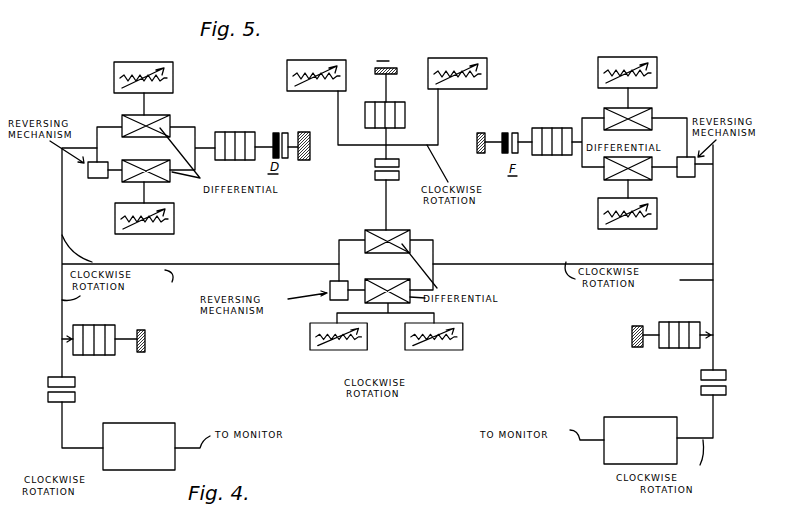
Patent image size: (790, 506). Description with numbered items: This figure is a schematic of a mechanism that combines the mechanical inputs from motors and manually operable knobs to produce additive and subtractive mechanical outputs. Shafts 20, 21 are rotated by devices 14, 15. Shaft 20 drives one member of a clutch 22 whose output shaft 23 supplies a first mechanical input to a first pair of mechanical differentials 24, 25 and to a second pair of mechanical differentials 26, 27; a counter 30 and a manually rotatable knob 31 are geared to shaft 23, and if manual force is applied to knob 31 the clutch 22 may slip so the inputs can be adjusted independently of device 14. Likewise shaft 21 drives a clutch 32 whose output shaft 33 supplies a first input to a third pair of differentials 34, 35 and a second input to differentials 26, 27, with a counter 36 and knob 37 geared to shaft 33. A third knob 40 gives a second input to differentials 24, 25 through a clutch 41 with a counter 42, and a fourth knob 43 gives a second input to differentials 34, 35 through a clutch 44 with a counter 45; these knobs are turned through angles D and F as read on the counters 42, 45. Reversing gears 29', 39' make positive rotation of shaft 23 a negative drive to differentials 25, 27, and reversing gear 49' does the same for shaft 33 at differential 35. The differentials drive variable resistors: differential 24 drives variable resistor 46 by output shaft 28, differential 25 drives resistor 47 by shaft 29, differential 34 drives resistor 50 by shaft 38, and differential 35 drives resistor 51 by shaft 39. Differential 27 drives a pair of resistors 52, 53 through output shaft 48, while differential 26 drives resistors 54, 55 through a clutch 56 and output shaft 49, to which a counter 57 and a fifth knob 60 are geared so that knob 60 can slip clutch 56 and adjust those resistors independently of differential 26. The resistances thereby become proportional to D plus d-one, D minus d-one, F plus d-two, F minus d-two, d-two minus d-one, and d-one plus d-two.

The device 14 is at (162, 432).
The device 15 is at (626, 428).
The shaft 20 is at (78, 448).
The shaft 21 is at (713, 425).
The clutch 22 is at (78, 382).
The output shaft 23 is at (62, 166).
The mechanical differential 24 is at (122, 122).
The mechanical differential 25 is at (126, 176).
The mechanical differential 26 is at (365, 235).
The mechanical differential 27 is at (363, 297).
The output shaft 28 is at (150, 106).
The output shaft 29 is at (167, 192).
The reversing gear 29' is at (88, 179).
The counter 30 is at (92, 325).
The manually rotatable knob 31 is at (141, 330).
The clutch 32 is at (700, 376).
The output shaft 33 is at (713, 162).
The mechanical differential 34 is at (648, 118).
The mechanical differential 35 is at (650, 172).
The counter 36 is at (677, 322).
The manually rotatable knob 37 is at (638, 326).
The output shaft 38 is at (636, 97).
The output shaft 39 is at (657, 195).
The reversing gear 39' is at (320, 288).
The manual knob 40 is at (305, 160).
The clutch 41 is at (277, 133).
The counter 42 is at (232, 132).
The knob 43 is at (481, 154).
The clutch 44 is at (516, 133).
The counter 45 is at (559, 128).
The variable resistor 46 is at (175, 74).
The variable resistor 47 is at (175, 218).
The output shaft 48 is at (385, 375).
The output shaft 49 is at (388, 127).
The reversing gear 49' is at (716, 171).
The variable resistor 50 is at (598, 65).
The variable resistor 51 is at (598, 207).
The variable resistor 52 is at (310, 347).
The variable resistor 53 is at (463, 347).
The variable resistor 54 is at (319, 92).
The variable resistor 55 is at (468, 86).
The clutch 56 is at (400, 175).
The counter 57 is at (367, 102).
The manually operable knob 60 is at (392, 75).